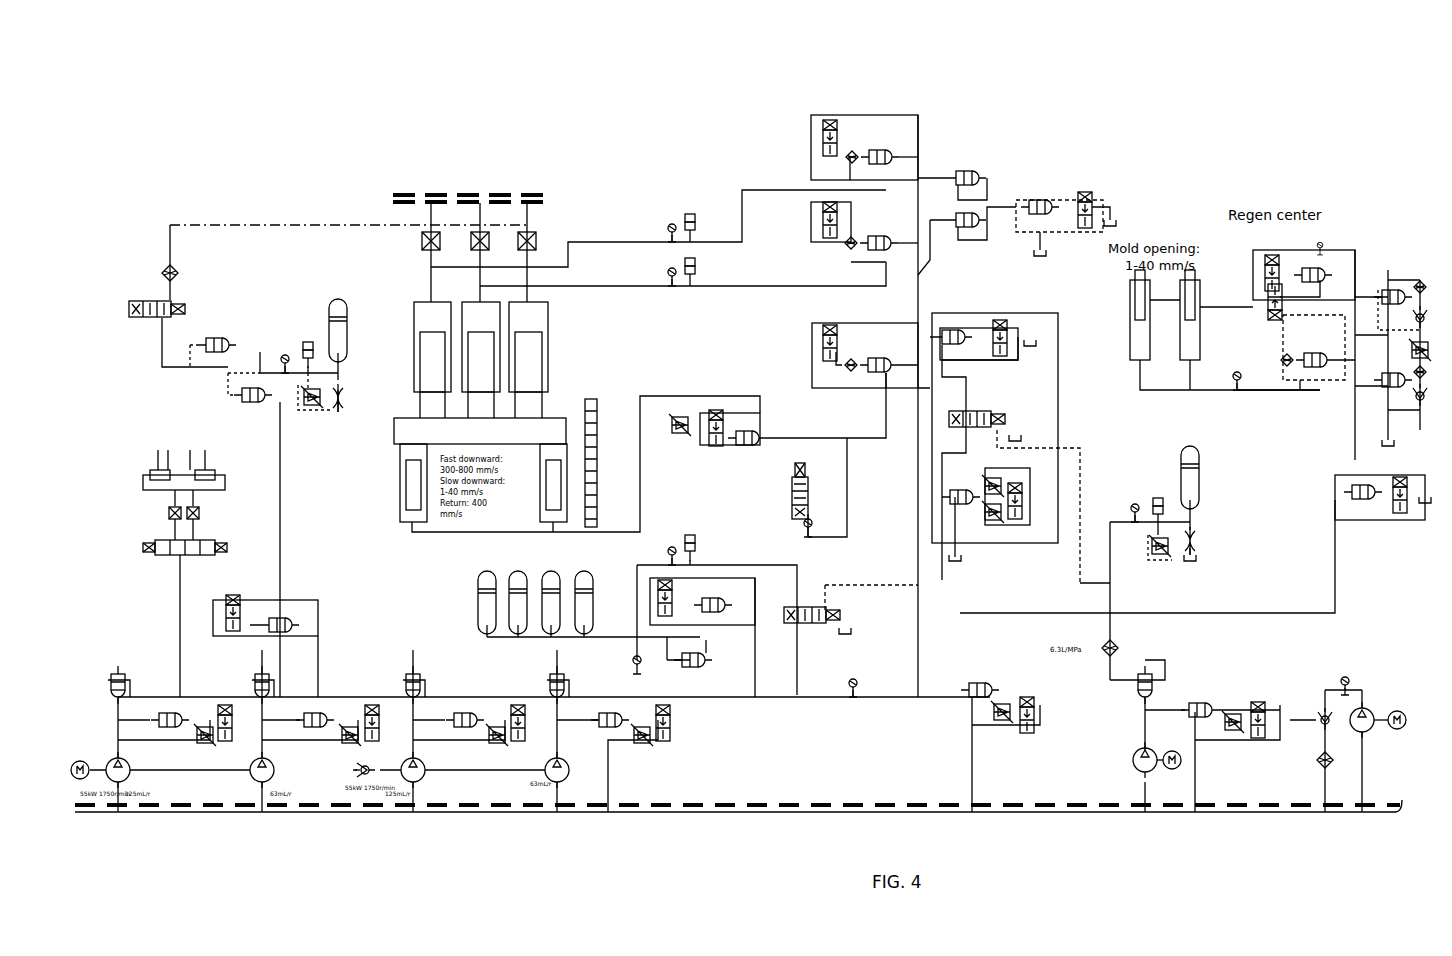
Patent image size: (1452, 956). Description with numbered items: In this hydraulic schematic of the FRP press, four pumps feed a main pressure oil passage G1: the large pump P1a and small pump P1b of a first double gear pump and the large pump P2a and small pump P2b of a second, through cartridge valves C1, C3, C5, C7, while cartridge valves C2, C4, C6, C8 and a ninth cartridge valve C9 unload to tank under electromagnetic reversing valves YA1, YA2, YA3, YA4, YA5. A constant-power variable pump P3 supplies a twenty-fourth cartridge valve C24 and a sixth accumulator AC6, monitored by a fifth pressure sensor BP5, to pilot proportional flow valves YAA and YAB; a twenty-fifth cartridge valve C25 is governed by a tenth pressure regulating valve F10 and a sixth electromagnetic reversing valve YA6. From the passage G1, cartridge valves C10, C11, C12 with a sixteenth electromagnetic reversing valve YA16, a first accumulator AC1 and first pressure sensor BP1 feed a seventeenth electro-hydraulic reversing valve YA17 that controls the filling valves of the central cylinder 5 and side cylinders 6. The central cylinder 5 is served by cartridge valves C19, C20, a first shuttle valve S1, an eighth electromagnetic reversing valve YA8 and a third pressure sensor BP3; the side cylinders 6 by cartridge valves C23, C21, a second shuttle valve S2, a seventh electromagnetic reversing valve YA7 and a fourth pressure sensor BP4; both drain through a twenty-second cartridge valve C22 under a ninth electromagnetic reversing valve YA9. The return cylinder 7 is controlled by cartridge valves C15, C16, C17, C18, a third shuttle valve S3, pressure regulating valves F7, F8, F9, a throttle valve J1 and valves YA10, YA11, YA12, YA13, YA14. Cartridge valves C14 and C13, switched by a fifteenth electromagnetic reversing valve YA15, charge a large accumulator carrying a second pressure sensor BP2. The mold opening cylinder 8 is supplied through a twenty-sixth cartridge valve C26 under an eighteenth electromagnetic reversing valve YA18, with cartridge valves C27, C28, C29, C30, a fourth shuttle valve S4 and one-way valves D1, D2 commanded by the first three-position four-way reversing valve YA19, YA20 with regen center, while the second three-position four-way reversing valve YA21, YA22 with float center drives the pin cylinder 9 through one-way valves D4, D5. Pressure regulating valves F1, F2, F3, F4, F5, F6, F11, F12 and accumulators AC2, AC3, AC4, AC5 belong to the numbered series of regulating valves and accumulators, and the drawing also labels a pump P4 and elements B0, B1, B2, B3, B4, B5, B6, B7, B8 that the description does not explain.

The central cylinder 5 is at (481, 360).
The side cylinder 6 is at (481, 360).
The return cylinder 7 is at (483, 483).
The mold opening cylinder 8 is at (1209, 330).
The pin cylinder 9 is at (172, 466).
The prefill valves B0 is at (467, 241).
The pressure sensor B1 is at (852, 677).
The pressure sensor B2 is at (664, 550).
The pressure sensor B3 is at (1320, 244).
The pressure sensor B4 is at (283, 355).
The pressure sensor B5 is at (663, 273).
The pressure sensor B6 is at (663, 227).
The pressure sensor B7 is at (1345, 676).
The pressure sensor B8 is at (1133, 504).
The first pressure sensor BP1 is at (308, 348).
The second pressure sensor BP2 is at (693, 546).
The third pressure sensor BP3 is at (703, 271).
The fourth pressure sensor BP4 is at (690, 218).
The fifth pressure sensor BP5 is at (1158, 505).
The first cartridge valve C1 is at (109, 693).
The second cartridge valve C2 is at (165, 728).
The third cartridge valve C3 is at (250, 685).
The fourth cartridge valve C4 is at (312, 728).
The fifth cartridge valve C5 is at (402, 685).
The sixth cartridge valve C6 is at (462, 728).
The seventh cartridge valve C7 is at (568, 685).
The eighth cartridge valve C8 is at (606, 726).
The ninth cartridge valve C9 is at (1000, 740).
The tenth cartridge valve C10 is at (284, 657).
The eleventh cartridge valve C11 is at (250, 397).
The twelfth cartridge valve C12 is at (213, 345).
The thirteenth cartridge valve C13 is at (694, 660).
The fourteenth cartridge valve C14 is at (719, 614).
The fifteenth cartridge valve C15 is at (954, 525).
The sixteenth cartridge valve C16 is at (807, 455).
The seventeenth cartridge valve C17 is at (895, 365).
The eighteenth cartridge valve C18 is at (994, 446).
The nineteenth cartridge valve C19 is at (889, 235).
The twentieth cartridge valve C20 is at (967, 240).
The twenty-first cartridge valve C21 is at (952, 179).
The twenty-second cartridge valve C22 is at (1059, 218).
The twenty-third cartridge valve C23 is at (889, 150).
The twenty-fourth cartridge valve C24 is at (1137, 736).
The twenty-fifth cartridge valve C25 is at (1212, 748).
The twenty-sixth cartridge valve C26 is at (1375, 497).
The twenty-seventh cartridge valve C27 is at (1387, 409).
The twenty-eighth cartridge valve C28 is at (1296, 363).
The twenty-ninth cartridge valve C29 is at (1397, 300).
The thirtieth cartridge valve C30 is at (1313, 275).
The first pressure regulating valve F1 is at (198, 743).
The second pressure regulating valve F2 is at (343, 743).
The third pressure regulating valve F3 is at (495, 744).
The fourth pressure regulating valve F4 is at (639, 744).
The fifth pressure regulating valve F5 is at (999, 721).
The sixth pressure regulating valve F6 is at (314, 406).
The seventh pressure regulating valve F7 is at (670, 434).
The eighth pressure regulating valve F8 is at (983, 521).
The ninth pressure regulating valve F9 is at (999, 490).
The tenth pressure regulating valve F10 is at (1224, 731).
The eleventh pressure regulating valve F11 is at (1148, 555).
The twelfth pressure regulating valve F12 is at (1422, 382).
The first electromagnetic reversing valve YA1 is at (237, 725).
The second electromagnetic reversing valve YA2 is at (385, 725).
The third electromagnetic reversing valve YA3 is at (515, 718).
The fourth electromagnetic reversing valve YA4 is at (679, 725).
The fifth electromagnetic reversing valve YA5 is at (1042, 715).
The sixth electromagnetic reversing valve YA6 is at (1273, 721).
The seventh electromagnetic reversing valve YA7 is at (864, 137).
The eighth electromagnetic reversing valve YA8 is at (833, 222).
The ninth electromagnetic reversing valve YA9 is at (1094, 204).
The tenth electromagnetic reversing valve YA10 is at (865, 346).
The eleventh electromagnetic ball valve YA11 is at (730, 440).
The twelfth electromagnetic reversing valve YA12 is at (777, 491).
The thirteenth electromagnetic reversing valve YA13 is at (988, 349).
The fourteenth electromagnetic reversing valve YA14 is at (1028, 504).
The fifteenth electromagnetic reversing valve YA15 is at (702, 601).
The sixteenth electromagnetic reversing valve YA16 is at (265, 610).
The seventeenth electro-hydraulic reversing valve YA17 is at (144, 302).
The eighteenth electromagnetic reversing valve YA18 is at (1409, 507).
The first three-position four-way reversing valve YA19 is at (1304, 346).
The first three-position four-way reversing valve YA20 is at (1298, 332).
The second three-position four-way reversing valve YA21 is at (161, 608).
The second three-position four-way reversing valve YA22 is at (236, 548).
The first proportional flow valve YAA is at (851, 609).
The second proportional flow valve YAB is at (1014, 490).
The large pump of first double gear pump P1a is at (127, 769).
The small pump of first double gear pump P1b is at (271, 770).
The large pump of second double gear pump P2a is at (423, 771).
The small pump of second double gear pump P2b is at (567, 770).
The constant-power variable pump P3 is at (1148, 761).
The pump P4 is at (1340, 751).
The first accumulator AC1 is at (349, 342).
The second accumulator AC2 is at (473, 591).
The third accumulator AC3 is at (518, 591).
The fourth accumulator AC4 is at (551, 591).
The fifth accumulator AC5 is at (584, 591).
The sixth accumulator AC6 is at (1204, 503).
The first shuttle valve S1 is at (857, 249).
The second shuttle valve S2 is at (843, 161).
The third shuttle valve S3 is at (843, 370).
The fourth shuttle valve S4 is at (1276, 360).
The first one-way valve D1 is at (1428, 386).
The second one-way valve D2 is at (1428, 304).
The fourth one-way valve D4 is at (164, 505).
The fifth one-way valve D5 is at (202, 505).
The throttle valve J1 is at (798, 526).
The main pressure oil passage G1 is at (909, 406).